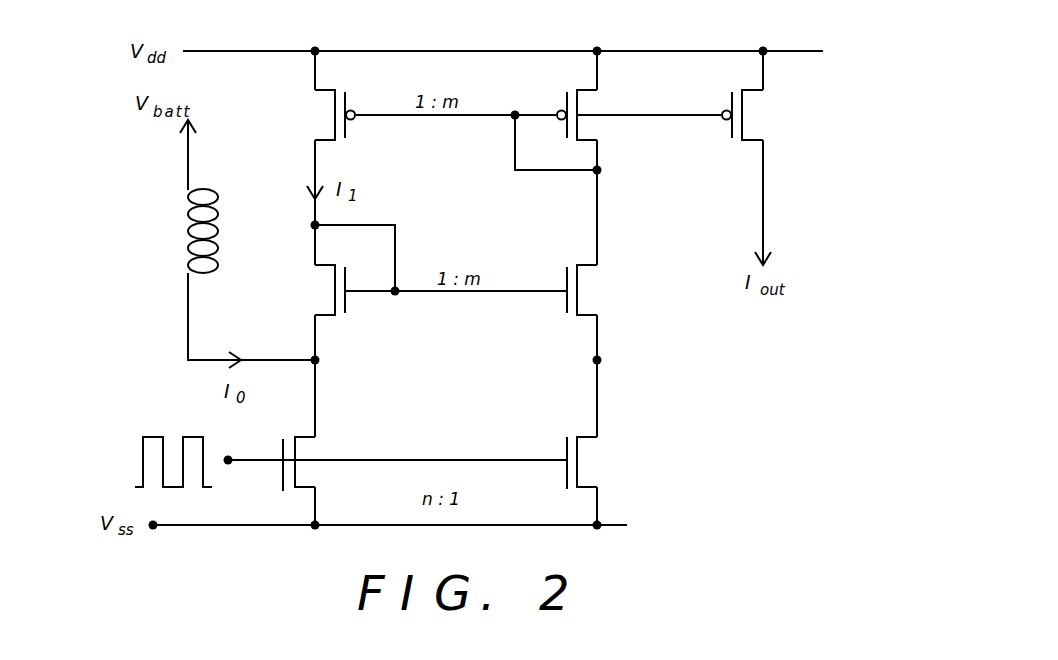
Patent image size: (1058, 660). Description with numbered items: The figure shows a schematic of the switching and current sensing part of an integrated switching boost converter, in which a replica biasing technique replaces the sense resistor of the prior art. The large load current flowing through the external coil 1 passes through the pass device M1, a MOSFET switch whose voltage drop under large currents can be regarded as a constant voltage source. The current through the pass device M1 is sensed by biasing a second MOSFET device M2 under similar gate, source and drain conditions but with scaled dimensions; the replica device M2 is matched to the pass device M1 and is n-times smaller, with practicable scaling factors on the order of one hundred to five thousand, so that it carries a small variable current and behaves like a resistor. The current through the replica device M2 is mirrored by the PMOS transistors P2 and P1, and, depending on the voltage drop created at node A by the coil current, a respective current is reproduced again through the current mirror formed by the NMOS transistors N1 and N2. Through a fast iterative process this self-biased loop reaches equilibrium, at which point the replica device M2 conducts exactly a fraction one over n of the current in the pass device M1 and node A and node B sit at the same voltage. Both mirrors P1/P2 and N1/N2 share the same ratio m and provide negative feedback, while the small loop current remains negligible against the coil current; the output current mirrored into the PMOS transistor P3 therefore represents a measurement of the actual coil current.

The external coil 1 is at (188, 233).
The PMOS transistor P1 is at (325, 115).
The PMOS transistor P2 is at (587, 115).
The PMOS transistor P3 is at (750, 115).
The NMOS transistor N1 is at (317, 290).
The NMOS transistor N2 is at (592, 290).
The pass device M1 is at (305, 477).
The MOSFET device M2 is at (593, 463).
The node A is at (321, 361).
The node B is at (603, 361).